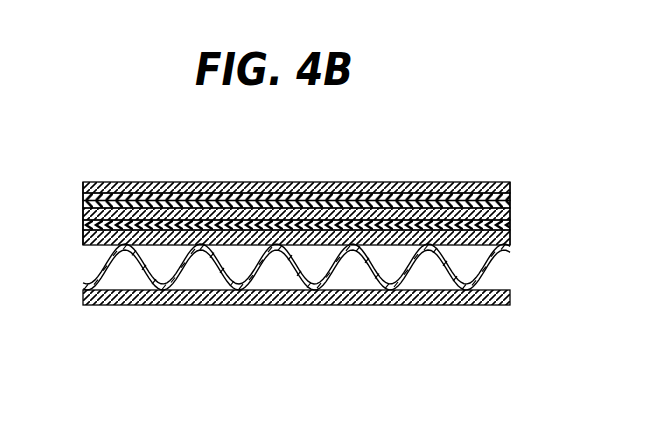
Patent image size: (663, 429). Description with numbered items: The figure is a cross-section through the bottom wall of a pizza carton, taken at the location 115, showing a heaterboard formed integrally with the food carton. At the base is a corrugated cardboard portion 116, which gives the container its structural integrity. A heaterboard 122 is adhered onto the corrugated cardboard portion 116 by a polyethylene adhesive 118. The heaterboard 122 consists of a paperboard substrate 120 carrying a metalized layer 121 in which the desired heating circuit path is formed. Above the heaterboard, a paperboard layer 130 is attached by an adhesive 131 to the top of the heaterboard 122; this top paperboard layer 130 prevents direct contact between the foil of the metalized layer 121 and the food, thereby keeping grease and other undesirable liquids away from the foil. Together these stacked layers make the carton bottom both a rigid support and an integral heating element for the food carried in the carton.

The cross-section location of carton bottom 115 is at (361, 173).
The corrugated cardboard portion 116 is at (517, 232).
The polyethylene adhesive 118 is at (510, 232).
The paperboard substrate 120 is at (511, 215).
The metalized layer 121 is at (512, 203).
The heaterboard 122 is at (84, 228).
The paperboard layer 130 is at (248, 191).
The adhesive 131 is at (300, 201).